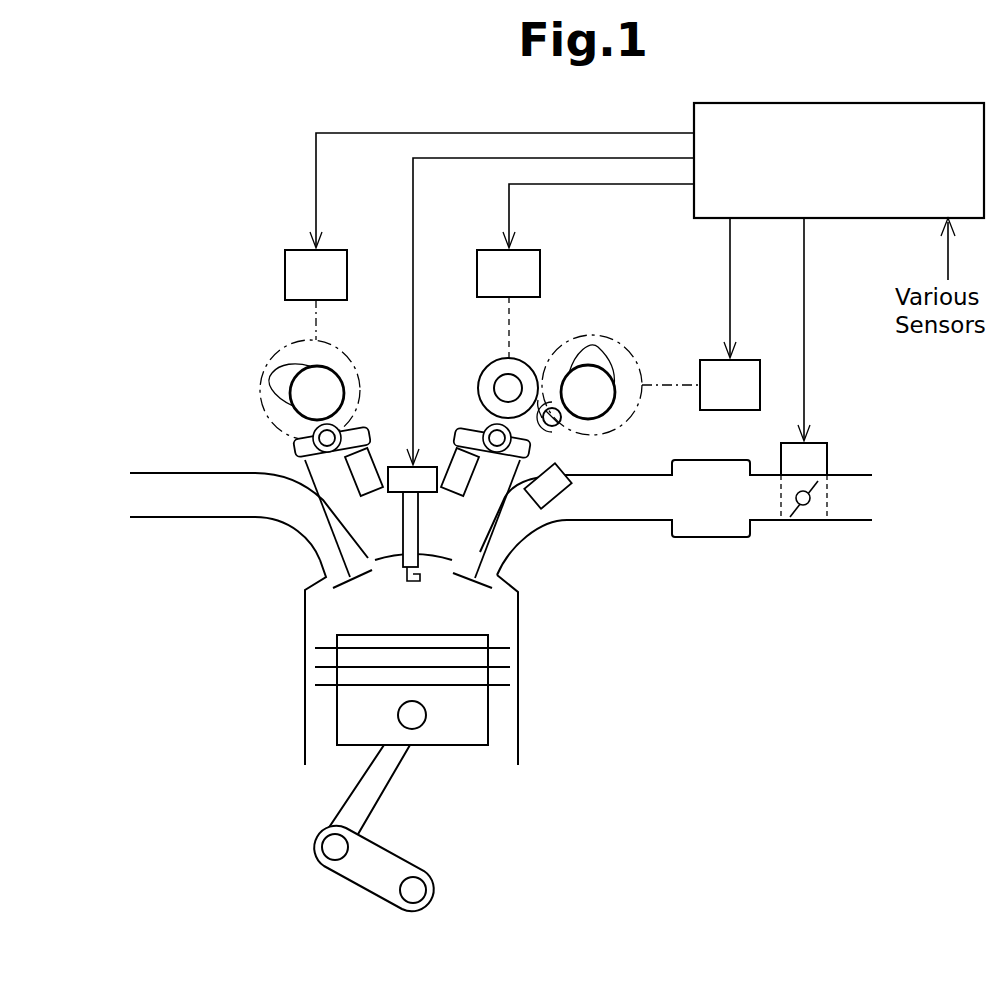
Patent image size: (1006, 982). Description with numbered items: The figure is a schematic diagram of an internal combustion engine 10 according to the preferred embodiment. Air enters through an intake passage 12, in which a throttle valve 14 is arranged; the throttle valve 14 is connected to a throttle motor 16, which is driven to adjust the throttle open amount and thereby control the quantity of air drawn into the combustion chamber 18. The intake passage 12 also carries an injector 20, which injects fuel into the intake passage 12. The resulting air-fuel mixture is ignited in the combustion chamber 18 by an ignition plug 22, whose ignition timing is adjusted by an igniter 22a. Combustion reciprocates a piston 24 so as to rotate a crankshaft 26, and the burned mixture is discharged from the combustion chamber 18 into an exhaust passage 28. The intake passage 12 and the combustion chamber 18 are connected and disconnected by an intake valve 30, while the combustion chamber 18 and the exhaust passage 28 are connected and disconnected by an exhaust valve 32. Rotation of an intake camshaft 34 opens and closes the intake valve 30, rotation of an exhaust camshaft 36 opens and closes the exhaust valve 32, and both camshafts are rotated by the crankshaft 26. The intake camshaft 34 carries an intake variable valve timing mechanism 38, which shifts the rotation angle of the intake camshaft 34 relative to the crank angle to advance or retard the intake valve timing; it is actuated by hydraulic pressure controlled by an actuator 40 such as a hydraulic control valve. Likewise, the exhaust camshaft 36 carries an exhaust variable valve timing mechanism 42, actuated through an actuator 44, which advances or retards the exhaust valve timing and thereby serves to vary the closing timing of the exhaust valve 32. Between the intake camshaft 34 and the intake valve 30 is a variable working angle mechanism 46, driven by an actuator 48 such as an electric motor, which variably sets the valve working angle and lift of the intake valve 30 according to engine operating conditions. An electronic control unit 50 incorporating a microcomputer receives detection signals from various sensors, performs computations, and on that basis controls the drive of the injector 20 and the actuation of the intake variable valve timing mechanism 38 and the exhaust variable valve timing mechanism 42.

The internal combustion engine 10 is at (268, 712).
The intake passage 12 is at (601, 521).
The throttle valve 14 is at (799, 519).
The throttle motor 16 is at (828, 458).
The combustion chamber 18 is at (326, 610).
The injector 20 is at (556, 492).
The ignition plug 22 is at (403, 511).
The igniter 22a is at (393, 466).
The piston 24 is at (467, 746).
The crankshaft 26 is at (422, 878).
The exhaust passage 28 is at (233, 520).
The intake valve 30 is at (478, 537).
The exhaust valve 32 is at (320, 560).
The intake camshaft 34 is at (620, 408).
The exhaust camshaft 36 is at (303, 402).
The intake variable valve timing mechanism 38 is at (618, 345).
The actuator 40 is at (752, 360).
The exhaust variable valve timing mechanism 42 is at (266, 366).
The actuator 44 is at (338, 250).
The variable working angle mechanism 46 is at (486, 372).
The actuator 48 is at (531, 250).
The electronic control unit (ECU) 50 is at (958, 103).